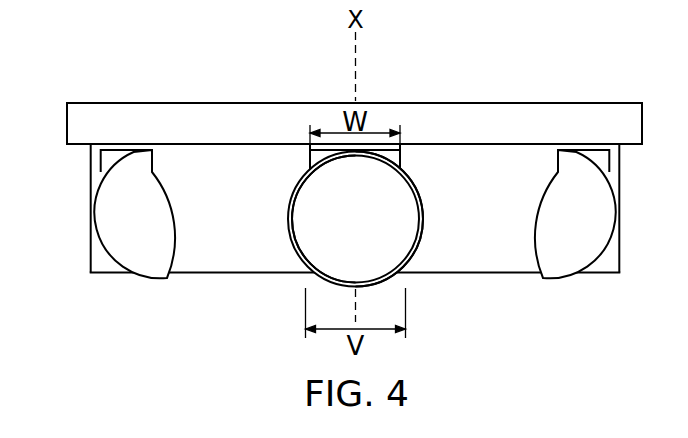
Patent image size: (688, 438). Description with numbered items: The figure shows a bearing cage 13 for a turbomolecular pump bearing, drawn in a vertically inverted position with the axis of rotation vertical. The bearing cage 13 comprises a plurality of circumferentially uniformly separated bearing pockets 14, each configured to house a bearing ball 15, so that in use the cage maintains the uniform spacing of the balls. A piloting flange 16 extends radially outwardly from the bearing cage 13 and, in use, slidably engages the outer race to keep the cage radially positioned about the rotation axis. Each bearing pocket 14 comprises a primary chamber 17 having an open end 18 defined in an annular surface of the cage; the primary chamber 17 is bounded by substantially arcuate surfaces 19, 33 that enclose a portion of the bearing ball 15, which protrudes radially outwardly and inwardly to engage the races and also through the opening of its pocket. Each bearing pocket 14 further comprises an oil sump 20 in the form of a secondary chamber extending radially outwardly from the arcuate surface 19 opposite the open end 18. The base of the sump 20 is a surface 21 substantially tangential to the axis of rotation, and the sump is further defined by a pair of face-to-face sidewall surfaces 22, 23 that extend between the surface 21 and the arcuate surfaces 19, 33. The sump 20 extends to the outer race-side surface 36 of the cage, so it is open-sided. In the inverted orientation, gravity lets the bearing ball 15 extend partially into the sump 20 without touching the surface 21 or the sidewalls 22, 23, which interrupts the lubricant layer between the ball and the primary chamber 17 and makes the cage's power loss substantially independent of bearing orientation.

The bearing cage 13 is at (540, 122).
The piloting flange 16 is at (70, 146).
The surface tangential to the axis of rotation 21 is at (312, 147).
The oil sump 20 is at (392, 152).
The sidewall surface 22 is at (311, 157).
The sidewall surface 23 is at (403, 162).
The primary chamber 17 is at (288, 207).
The substantially arcuate surface 19 is at (285, 225).
The substantially arcuate surface 33 is at (417, 192).
The bearing ball 15 is at (325, 253).
The bearing pocket 14 is at (413, 250).
The open end 18 is at (402, 272).
The outer race-side surface 36 is at (505, 250).